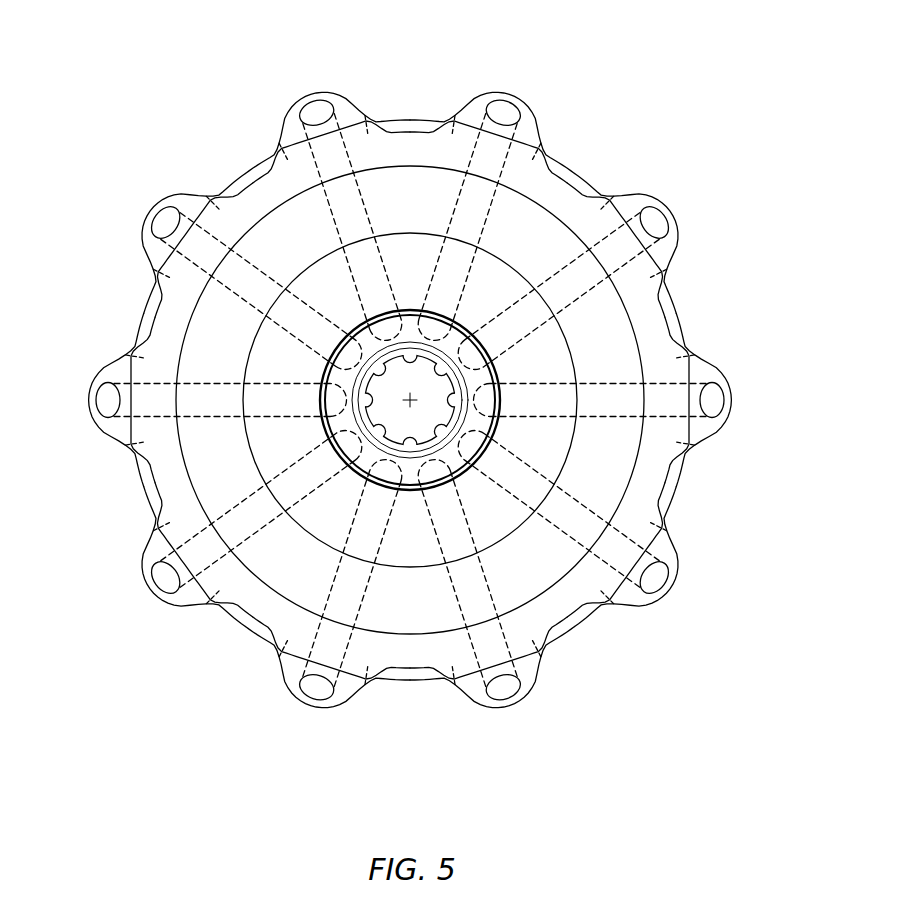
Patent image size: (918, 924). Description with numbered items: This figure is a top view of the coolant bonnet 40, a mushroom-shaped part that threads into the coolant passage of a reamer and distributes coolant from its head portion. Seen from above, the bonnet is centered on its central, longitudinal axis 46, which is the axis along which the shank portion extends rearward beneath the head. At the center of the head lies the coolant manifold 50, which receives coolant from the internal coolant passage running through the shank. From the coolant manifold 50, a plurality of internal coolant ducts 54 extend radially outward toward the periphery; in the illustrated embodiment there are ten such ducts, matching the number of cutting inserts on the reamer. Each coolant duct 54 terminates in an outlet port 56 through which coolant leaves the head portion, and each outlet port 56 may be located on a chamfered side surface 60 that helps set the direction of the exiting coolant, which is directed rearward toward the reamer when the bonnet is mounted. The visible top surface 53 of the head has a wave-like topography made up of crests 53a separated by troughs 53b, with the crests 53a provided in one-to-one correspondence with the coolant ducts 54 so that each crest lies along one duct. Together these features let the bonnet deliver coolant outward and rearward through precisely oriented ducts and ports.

The coolant bonnet 40 is at (651, 96).
The central, longitudinal axis 46 is at (408, 399).
The coolant manifold 50 is at (432, 381).
The top surface 53 is at (270, 578).
The crests 53a is at (186, 549).
The troughs 53b is at (178, 492).
The internal coolant ducts 54 is at (350, 213).
The outlet port 56 is at (318, 113).
The chamfered side surface 60 is at (473, 108).